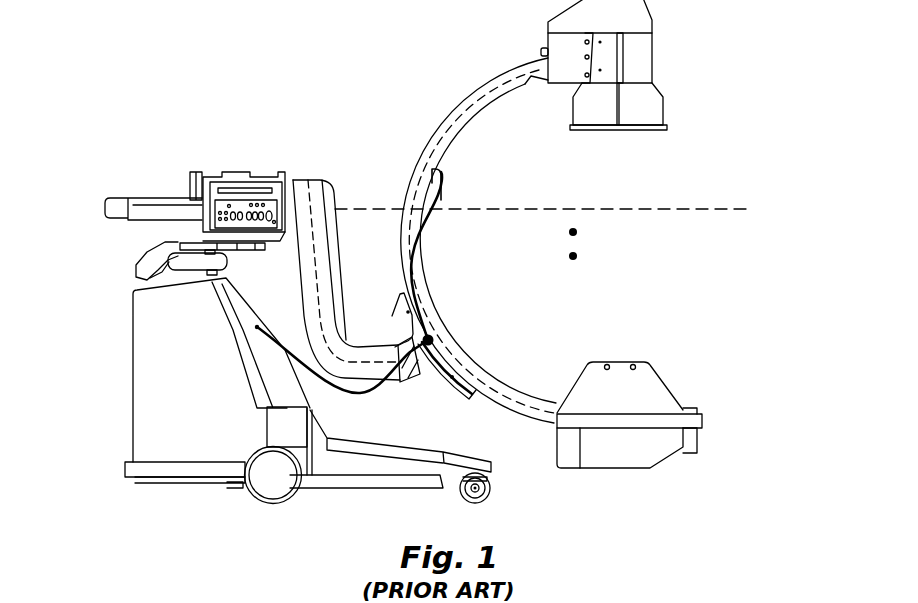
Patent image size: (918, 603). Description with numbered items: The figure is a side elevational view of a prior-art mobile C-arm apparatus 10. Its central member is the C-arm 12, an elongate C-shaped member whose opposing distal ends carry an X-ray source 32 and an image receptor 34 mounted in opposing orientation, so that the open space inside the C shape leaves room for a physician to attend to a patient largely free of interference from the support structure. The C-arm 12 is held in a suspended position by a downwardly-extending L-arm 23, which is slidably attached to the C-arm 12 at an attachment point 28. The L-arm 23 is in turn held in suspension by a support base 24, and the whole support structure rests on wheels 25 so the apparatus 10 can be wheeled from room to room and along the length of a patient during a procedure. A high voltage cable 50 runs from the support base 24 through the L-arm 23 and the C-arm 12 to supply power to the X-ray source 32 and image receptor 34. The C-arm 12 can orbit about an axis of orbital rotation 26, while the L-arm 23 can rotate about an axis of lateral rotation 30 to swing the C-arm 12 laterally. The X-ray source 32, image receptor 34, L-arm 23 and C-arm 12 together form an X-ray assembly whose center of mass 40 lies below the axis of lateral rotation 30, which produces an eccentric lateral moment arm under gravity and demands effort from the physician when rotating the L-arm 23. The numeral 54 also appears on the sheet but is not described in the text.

The mobile C-arm apparatus 10 is at (224, 45).
The C-arm 12 is at (412, 162).
The L-arm 23 is at (331, 183).
The support base 24 is at (128, 293).
The wheels 25 is at (460, 483).
The axis of orbital rotation 26 is at (575, 232).
The attachment point 28 is at (429, 345).
The axis of lateral rotation 30 is at (724, 210).
The X-ray source 32 is at (648, 392).
The image receptor 34 is at (648, 101).
The center of mass 40 is at (575, 256).
The high voltage cable 50 is at (447, 135).
The reference point 54 is at (738, 591).